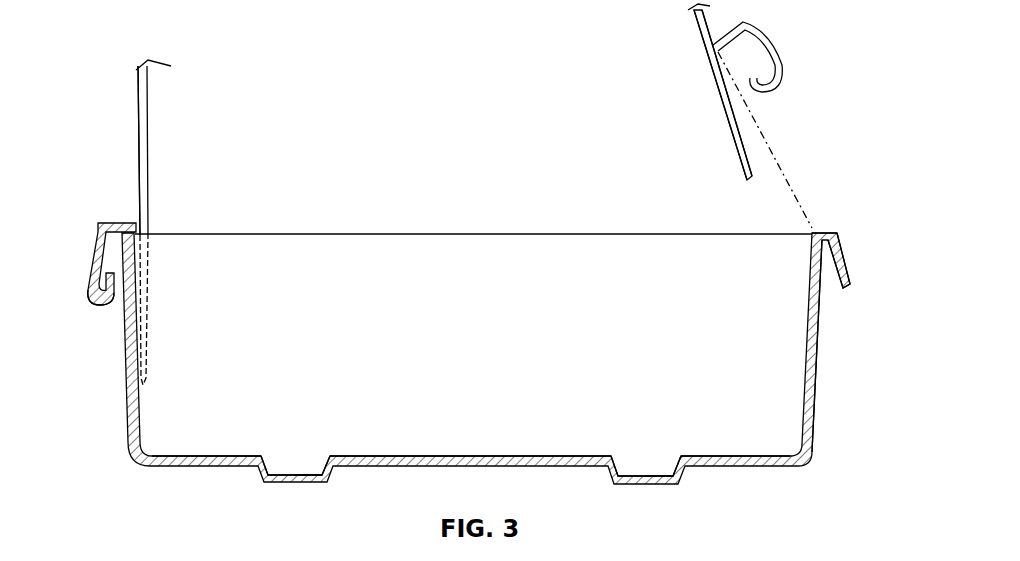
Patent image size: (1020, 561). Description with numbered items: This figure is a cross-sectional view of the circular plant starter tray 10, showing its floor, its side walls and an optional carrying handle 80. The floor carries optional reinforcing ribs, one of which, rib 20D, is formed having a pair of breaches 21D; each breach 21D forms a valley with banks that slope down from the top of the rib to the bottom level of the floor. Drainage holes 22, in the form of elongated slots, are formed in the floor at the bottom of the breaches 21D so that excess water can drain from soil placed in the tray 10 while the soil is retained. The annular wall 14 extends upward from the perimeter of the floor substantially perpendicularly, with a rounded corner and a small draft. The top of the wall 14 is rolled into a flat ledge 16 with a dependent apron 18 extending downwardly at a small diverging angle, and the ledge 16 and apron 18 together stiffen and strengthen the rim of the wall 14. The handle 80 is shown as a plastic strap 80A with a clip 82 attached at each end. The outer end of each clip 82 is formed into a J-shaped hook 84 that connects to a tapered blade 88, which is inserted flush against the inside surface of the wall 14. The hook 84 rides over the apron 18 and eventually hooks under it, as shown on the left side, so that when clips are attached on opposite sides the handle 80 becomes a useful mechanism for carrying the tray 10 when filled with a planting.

The plant starter tray 10 is at (125, 450).
The annular wall 14 is at (818, 334).
The flat ledge 16 is at (816, 225).
The dependent apron 18 is at (843, 250).
The reinforcing rib 20D is at (196, 456).
The breach 21D is at (322, 449).
The drainage hole 22 is at (280, 474).
The handle 80 is at (136, 92).
The plastic strap 80A is at (150, 132).
The clip 82 is at (105, 218).
The hook 84 is at (100, 306).
The tapered blade 88 is at (726, 135).